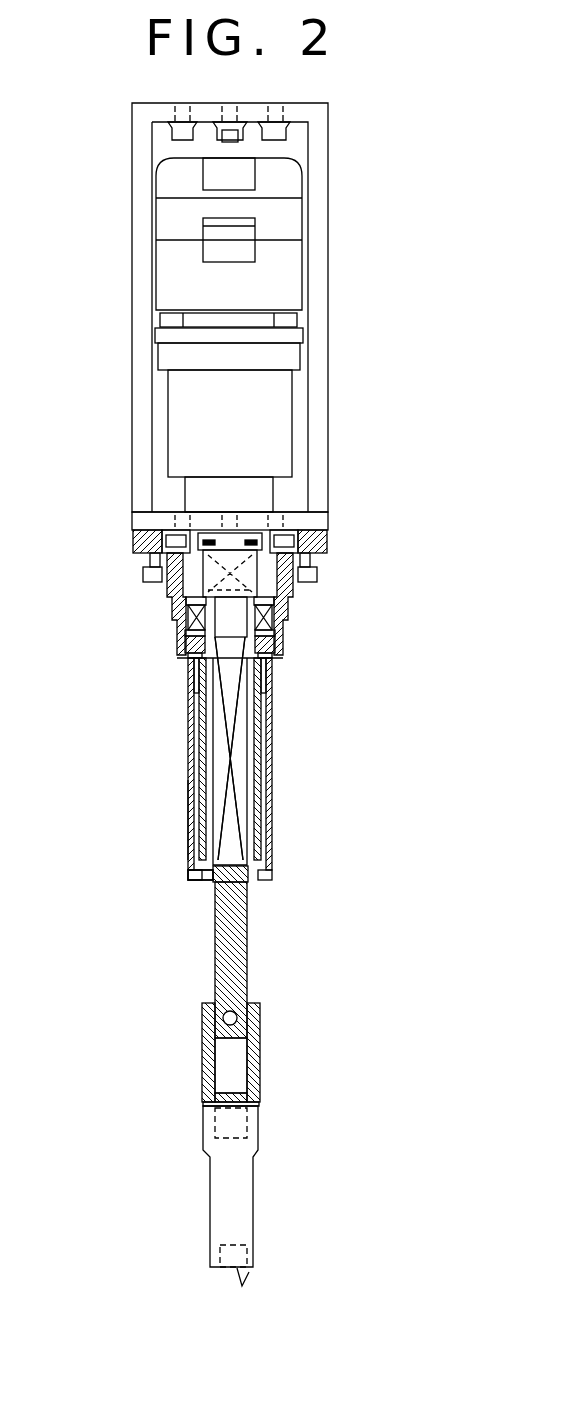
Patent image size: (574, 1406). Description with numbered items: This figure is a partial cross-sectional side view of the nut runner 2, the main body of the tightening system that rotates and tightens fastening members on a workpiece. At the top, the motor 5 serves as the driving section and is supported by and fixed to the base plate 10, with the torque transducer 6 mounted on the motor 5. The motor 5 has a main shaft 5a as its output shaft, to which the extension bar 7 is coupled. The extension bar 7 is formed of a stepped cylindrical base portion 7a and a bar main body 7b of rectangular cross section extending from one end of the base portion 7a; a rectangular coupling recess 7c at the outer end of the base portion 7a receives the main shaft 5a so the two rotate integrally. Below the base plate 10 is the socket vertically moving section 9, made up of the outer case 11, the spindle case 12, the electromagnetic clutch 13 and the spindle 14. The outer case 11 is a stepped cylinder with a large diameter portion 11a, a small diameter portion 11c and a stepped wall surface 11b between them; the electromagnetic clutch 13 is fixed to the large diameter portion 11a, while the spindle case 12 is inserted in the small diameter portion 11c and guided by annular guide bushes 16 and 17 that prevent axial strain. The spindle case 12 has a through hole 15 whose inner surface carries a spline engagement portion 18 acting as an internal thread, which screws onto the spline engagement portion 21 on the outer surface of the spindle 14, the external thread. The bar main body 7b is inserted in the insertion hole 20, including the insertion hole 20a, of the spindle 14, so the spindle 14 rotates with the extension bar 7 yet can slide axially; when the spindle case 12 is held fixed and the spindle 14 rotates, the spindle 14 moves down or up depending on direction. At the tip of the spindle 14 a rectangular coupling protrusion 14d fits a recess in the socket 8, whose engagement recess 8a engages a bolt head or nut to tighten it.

The nut runner 2 is at (406, 97).
The motor 5 is at (162, 256).
The main shaft 5a is at (305, 580).
The torque transducer 6 is at (182, 427).
The extension bar 7 is at (94, 585).
The base portion 7a is at (165, 578).
The bar main body 7b is at (185, 722).
The coupling recess 7c is at (165, 583).
The socket 8 is at (243, 1170).
The engagement recess 8a is at (250, 1282).
The socket vertically moving section 9 is at (391, 628).
The base plate 10 is at (318, 520).
The outer case 11 is at (424, 643).
The large diameter portion 11a is at (287, 630).
The stepped wall surface 11b is at (287, 638).
The small diameter portion 11c is at (273, 758).
The spindle case 12 is at (187, 762).
The electromagnetic clutch 13 is at (297, 620).
The spindle 14 is at (247, 892).
The coupling protrusion 14d is at (260, 1118).
The through hole 15 is at (188, 789).
The guide bush 16 is at (273, 720).
The guide bush 17 is at (262, 880).
The spline engagement portion 18 is at (214, 893).
The insertion hole 20 is at (243, 783).
The insertion hole 20a is at (300, 748).
The spline engagement portion 21 is at (166, 918).